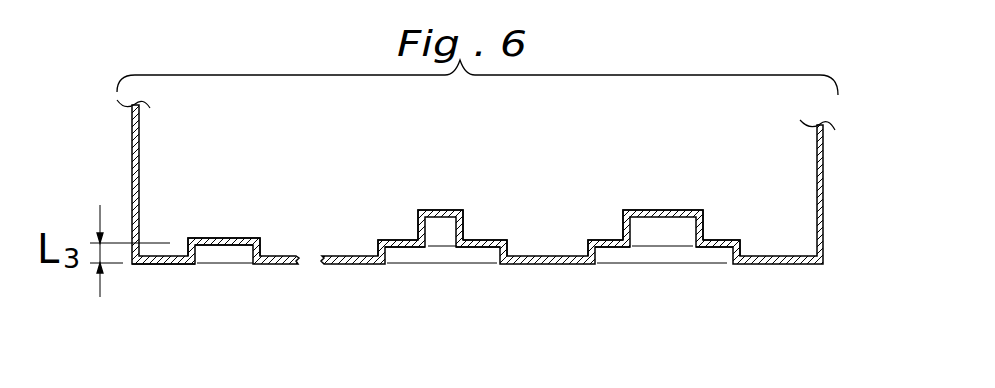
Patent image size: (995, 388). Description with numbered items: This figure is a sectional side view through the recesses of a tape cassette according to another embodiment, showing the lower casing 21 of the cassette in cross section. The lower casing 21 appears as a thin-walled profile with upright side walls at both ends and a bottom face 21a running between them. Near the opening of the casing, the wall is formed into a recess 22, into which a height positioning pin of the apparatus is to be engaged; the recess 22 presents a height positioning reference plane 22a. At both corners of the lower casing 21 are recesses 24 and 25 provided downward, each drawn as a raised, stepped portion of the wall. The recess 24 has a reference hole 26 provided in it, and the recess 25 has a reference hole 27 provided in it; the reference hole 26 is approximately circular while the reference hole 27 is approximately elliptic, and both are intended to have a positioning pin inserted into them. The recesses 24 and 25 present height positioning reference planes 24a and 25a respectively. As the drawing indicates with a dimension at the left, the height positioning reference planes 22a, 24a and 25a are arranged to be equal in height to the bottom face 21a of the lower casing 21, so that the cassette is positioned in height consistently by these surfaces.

The lower casing 21 is at (823, 223).
The bottom face 21a is at (158, 264).
The recess 22 is at (221, 238).
The height positioning reference plane 22a is at (233, 246).
The recess 24 is at (443, 210).
The height positioning reference plane 24a is at (403, 248).
The recess 25 is at (667, 210).
The height positioning reference plane 25a is at (713, 248).
The reference hole 26 is at (445, 232).
The reference hole 27 is at (680, 233).